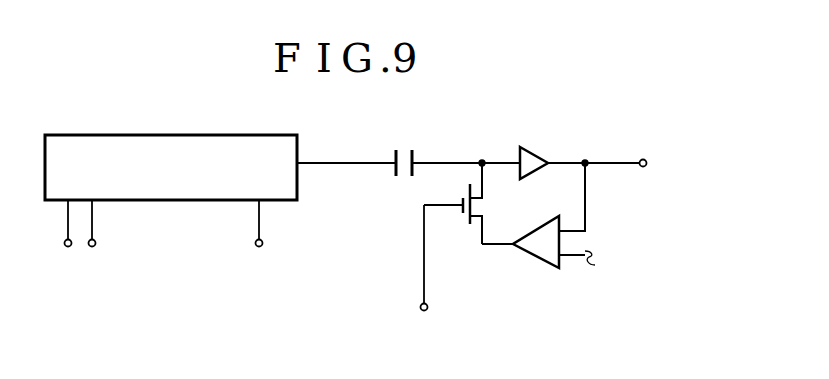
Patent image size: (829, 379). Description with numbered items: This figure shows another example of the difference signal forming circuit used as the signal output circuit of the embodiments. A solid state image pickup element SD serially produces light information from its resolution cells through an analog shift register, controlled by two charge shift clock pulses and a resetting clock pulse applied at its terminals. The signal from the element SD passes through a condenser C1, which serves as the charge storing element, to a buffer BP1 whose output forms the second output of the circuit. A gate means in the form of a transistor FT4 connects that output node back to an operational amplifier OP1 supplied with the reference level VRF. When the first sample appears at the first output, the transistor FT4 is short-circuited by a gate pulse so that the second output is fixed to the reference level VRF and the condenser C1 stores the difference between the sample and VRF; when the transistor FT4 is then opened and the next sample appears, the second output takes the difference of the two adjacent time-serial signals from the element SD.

The solid state image pickup element SD is at (171, 167).
The condenser C1 is at (406, 150).
The buffer BP1 is at (538, 147).
The transistor (gate means) FT4 is at (477, 208).
The operational amplifier OP1 is at (545, 223).
The reference level VRF is at (593, 255).